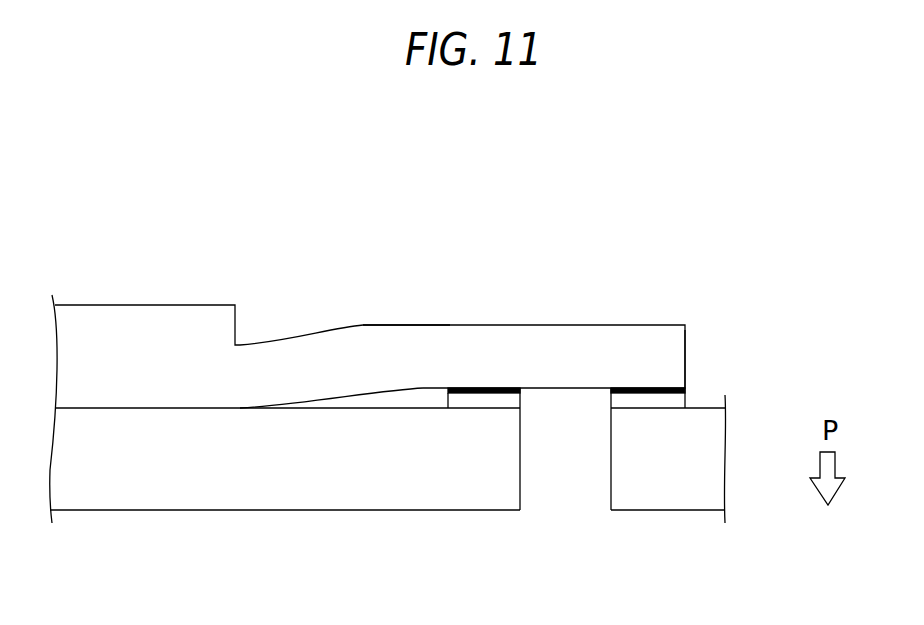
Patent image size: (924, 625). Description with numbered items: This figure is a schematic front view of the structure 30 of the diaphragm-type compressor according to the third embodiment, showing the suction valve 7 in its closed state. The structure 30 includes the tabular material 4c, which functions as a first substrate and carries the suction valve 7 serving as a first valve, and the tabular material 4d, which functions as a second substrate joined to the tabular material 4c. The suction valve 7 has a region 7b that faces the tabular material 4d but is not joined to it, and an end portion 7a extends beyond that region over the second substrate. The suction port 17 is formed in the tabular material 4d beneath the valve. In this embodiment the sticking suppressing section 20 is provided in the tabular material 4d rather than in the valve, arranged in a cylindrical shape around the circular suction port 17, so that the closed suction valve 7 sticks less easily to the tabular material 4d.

The structure 30 is at (791, 171).
The tabular material 4c is at (127, 325).
The tabular material 4d is at (117, 472).
The suction valve 7 is at (649, 345).
The end portion of plate member 7a is at (686, 355).
The region 7b is at (424, 391).
The suction port 17 is at (560, 468).
The sticking suppressing section 20 is at (489, 398).